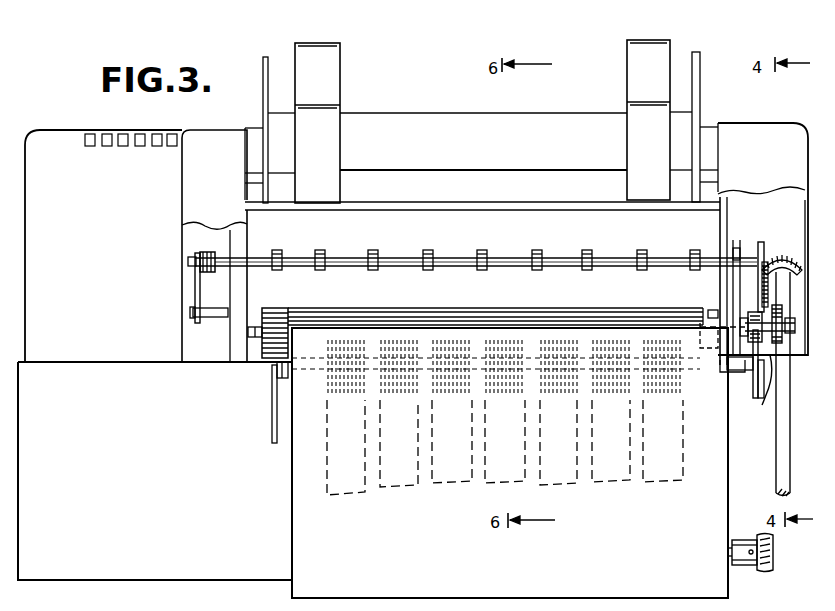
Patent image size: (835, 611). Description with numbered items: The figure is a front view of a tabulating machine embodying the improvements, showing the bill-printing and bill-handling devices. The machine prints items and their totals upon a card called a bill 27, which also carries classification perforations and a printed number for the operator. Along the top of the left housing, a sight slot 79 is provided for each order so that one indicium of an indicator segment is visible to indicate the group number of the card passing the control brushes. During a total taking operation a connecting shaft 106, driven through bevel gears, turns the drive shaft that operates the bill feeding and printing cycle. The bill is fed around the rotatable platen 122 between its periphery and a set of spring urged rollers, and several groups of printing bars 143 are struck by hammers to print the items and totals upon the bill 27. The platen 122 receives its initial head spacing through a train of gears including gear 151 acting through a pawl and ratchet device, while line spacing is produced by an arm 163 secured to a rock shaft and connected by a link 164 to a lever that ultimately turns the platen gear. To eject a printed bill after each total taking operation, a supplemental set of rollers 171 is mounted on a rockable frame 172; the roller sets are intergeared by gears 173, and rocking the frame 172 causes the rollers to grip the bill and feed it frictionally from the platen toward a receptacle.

The bill 27 is at (546, 186).
The sight slot 79 is at (177, 133).
The connecting shaft 106 is at (778, 466).
The platen 122 is at (485, 314).
The printing bars 143 is at (440, 337).
The gear 151 is at (757, 380).
The arm 163 is at (273, 377).
The link 164 is at (272, 418).
The supplemental set of rollers 171 is at (580, 250).
The rockable frame 172 is at (763, 255).
The gears 173 is at (203, 250).